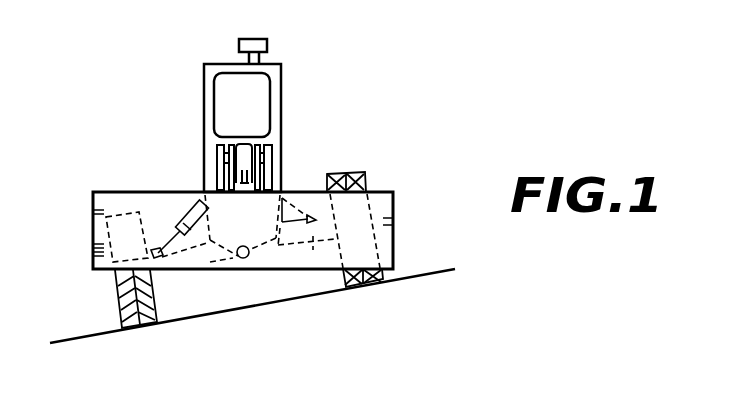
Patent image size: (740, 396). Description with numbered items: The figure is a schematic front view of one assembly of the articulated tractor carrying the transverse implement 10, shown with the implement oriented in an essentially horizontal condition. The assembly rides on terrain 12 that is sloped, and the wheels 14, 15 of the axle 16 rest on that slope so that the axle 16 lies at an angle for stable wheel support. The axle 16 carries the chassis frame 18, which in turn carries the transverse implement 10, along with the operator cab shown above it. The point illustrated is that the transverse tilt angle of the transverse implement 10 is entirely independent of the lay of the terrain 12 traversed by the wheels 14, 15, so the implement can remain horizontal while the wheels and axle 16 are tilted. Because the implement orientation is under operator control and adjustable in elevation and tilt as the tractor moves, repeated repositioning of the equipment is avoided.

The transverse implement 10 is at (145, 192).
The terrain 12 is at (437, 271).
The wheel 14 is at (118, 300).
The wheel 15 is at (363, 173).
The axle 16 is at (312, 270).
The chassis frame 18 is at (272, 168).